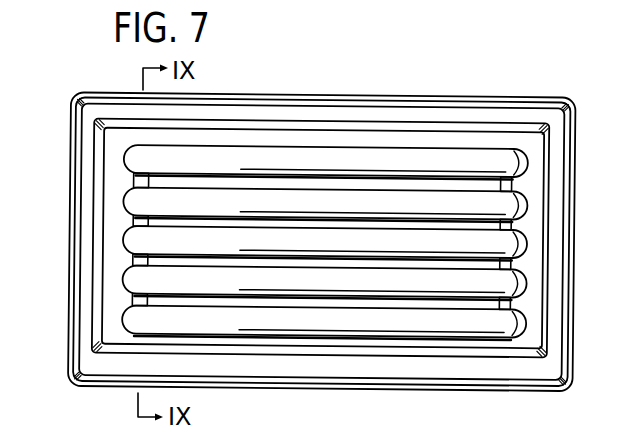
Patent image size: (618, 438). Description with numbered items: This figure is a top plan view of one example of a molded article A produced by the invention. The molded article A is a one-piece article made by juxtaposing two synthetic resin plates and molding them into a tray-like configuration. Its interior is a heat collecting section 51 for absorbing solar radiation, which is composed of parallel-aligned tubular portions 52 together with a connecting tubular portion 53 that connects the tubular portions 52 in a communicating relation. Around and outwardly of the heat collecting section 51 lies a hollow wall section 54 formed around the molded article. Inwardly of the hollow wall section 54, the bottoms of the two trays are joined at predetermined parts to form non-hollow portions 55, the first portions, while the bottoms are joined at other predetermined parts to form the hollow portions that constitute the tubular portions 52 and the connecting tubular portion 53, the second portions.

The molded article A is at (504, 92).
The heat collecting section 51 is at (122, 252).
The tubular portions 52 is at (515, 167).
The connecting tubular portion 53 is at (150, 226).
The hollow wall section 54 is at (556, 133).
The non-hollow portions 55 is at (420, 186).